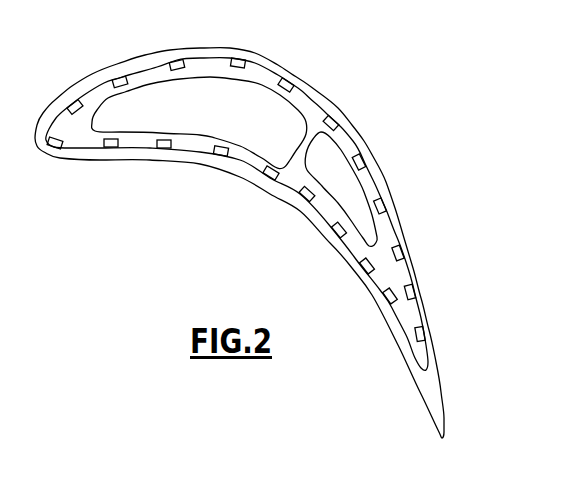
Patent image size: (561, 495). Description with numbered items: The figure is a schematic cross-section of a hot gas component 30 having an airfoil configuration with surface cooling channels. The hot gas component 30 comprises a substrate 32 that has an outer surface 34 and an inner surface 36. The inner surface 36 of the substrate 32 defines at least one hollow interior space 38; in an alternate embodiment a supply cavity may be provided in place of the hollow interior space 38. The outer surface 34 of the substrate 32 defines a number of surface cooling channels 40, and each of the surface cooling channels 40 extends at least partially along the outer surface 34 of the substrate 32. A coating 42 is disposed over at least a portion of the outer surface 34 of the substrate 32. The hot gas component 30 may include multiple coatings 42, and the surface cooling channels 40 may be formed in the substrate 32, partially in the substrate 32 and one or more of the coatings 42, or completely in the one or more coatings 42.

The hot gas component 30 is at (423, 65).
The substrate 32 is at (366, 174).
The outer surface 34 is at (360, 118).
The inner surface 36 is at (140, 133).
The interior space 38 is at (233, 107).
The surface cooling channels 40 is at (384, 208).
The coating 42 is at (246, 168).